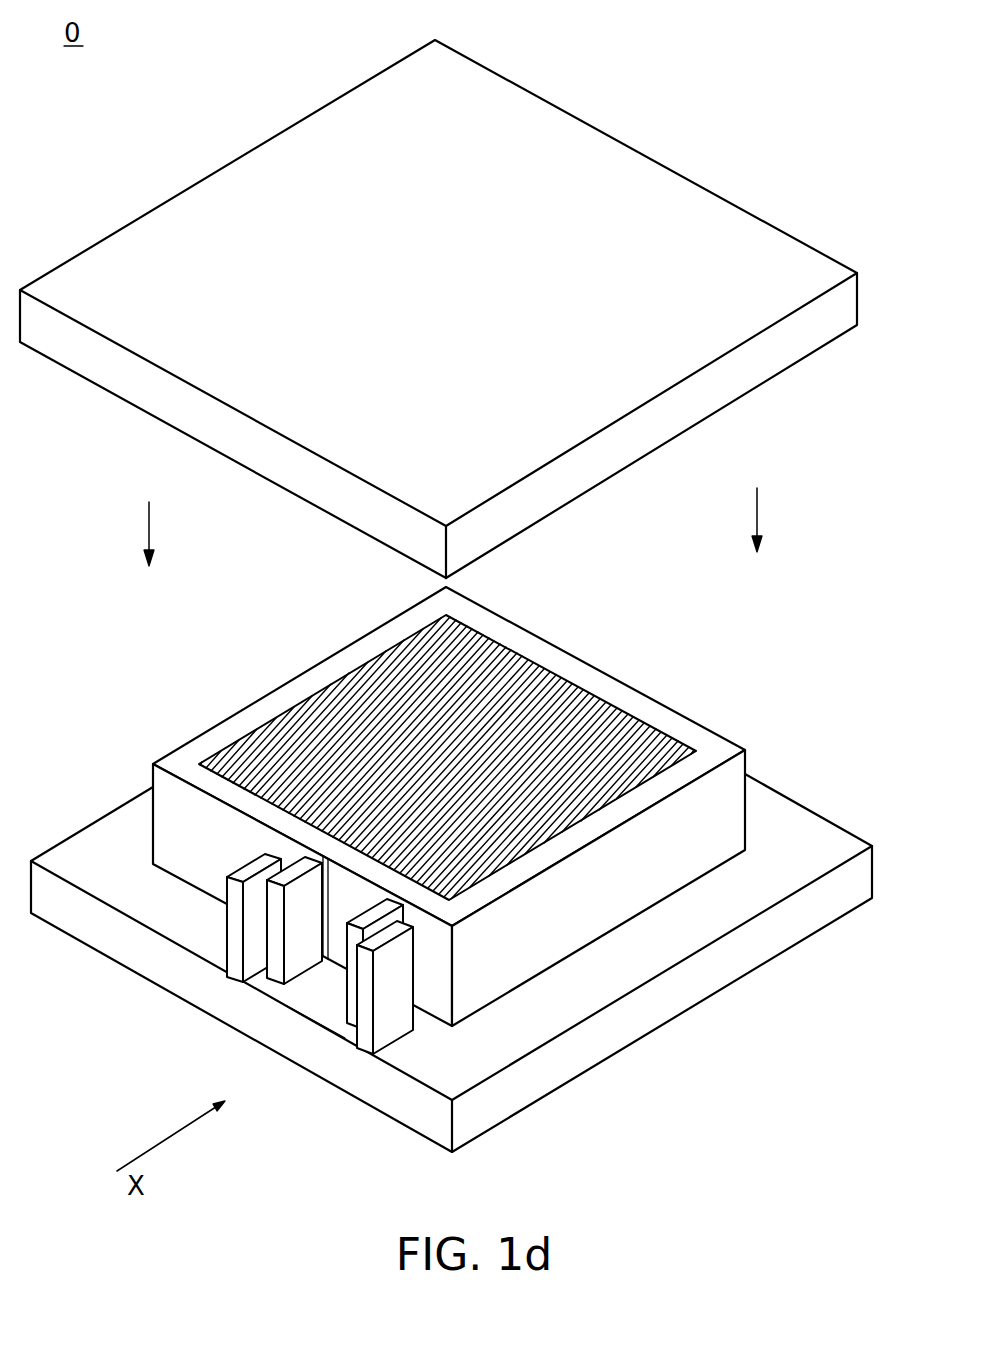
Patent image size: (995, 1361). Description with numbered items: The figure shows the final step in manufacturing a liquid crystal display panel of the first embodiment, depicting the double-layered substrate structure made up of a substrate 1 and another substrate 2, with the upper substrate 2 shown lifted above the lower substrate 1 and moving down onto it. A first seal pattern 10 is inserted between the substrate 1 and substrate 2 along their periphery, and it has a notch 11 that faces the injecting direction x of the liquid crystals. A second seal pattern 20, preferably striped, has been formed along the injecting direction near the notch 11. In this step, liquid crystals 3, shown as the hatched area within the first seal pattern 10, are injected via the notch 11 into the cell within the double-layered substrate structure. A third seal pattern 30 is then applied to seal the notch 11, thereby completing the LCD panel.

The substrate 1 is at (745, 961).
The substrate 2 is at (736, 381).
The liquid crystals 3 is at (535, 694).
The first seal pattern 10 is at (575, 919).
The notch 11 is at (332, 976).
The second seal pattern 20 is at (366, 1020).
The third seal pattern 30 is at (335, 905).